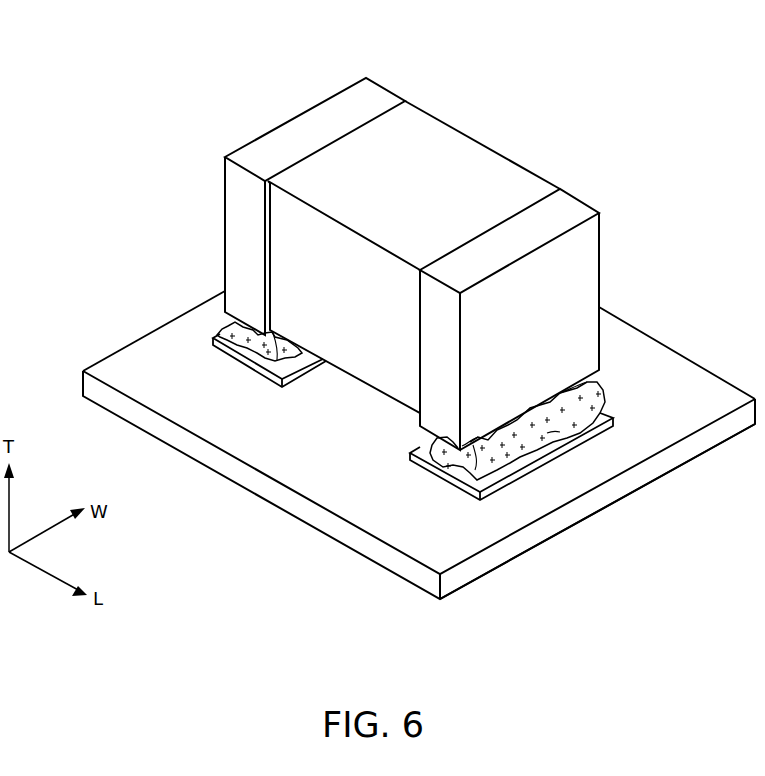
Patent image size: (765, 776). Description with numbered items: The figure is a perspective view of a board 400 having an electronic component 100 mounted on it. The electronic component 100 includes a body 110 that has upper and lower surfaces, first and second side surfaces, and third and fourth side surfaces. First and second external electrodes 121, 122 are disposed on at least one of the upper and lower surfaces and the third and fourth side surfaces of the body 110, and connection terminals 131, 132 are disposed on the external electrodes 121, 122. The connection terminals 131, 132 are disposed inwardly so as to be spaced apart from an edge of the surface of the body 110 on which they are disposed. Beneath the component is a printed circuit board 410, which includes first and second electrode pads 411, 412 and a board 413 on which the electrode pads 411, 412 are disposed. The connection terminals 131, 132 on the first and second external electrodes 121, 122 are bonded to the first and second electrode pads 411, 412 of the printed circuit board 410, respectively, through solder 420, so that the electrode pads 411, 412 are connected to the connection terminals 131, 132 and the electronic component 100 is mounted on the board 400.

The board having an electronic component 400 is at (609, 47).
The multilayer ceramic electronic component 100 is at (450, 245).
The body 110 is at (453, 160).
The first external electrode 121 is at (572, 206).
The second external electrode 122 is at (378, 93).
The first connection terminal 131 is at (575, 377).
The second connection terminal 132 is at (233, 333).
The printed circuit board 410 is at (418, 603).
The first electrode pad 411 is at (490, 482).
The second electrode pad 412 is at (272, 378).
The board 413 is at (505, 553).
The solder 420 is at (548, 430).